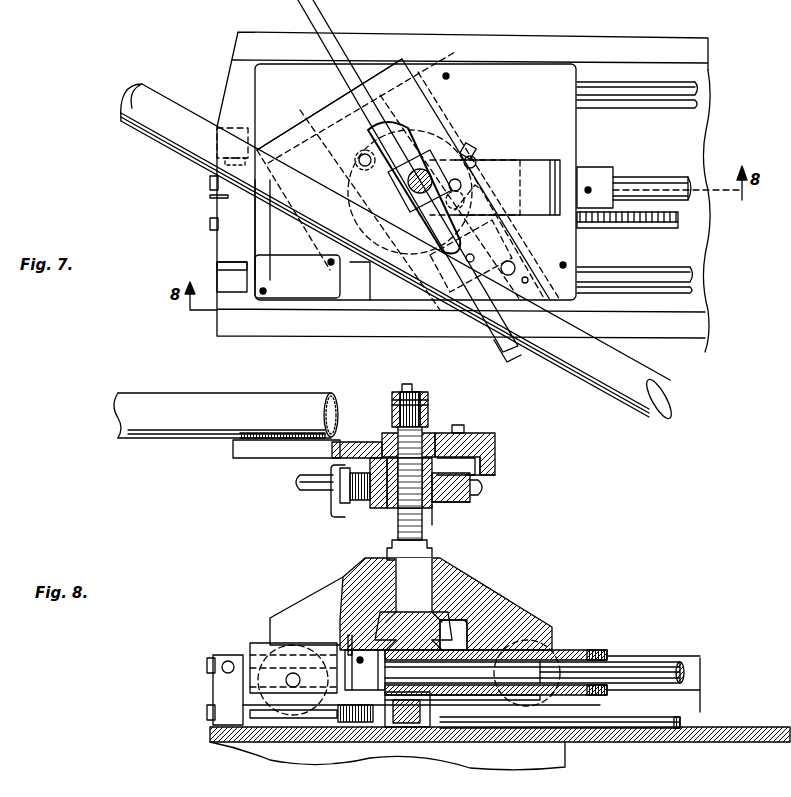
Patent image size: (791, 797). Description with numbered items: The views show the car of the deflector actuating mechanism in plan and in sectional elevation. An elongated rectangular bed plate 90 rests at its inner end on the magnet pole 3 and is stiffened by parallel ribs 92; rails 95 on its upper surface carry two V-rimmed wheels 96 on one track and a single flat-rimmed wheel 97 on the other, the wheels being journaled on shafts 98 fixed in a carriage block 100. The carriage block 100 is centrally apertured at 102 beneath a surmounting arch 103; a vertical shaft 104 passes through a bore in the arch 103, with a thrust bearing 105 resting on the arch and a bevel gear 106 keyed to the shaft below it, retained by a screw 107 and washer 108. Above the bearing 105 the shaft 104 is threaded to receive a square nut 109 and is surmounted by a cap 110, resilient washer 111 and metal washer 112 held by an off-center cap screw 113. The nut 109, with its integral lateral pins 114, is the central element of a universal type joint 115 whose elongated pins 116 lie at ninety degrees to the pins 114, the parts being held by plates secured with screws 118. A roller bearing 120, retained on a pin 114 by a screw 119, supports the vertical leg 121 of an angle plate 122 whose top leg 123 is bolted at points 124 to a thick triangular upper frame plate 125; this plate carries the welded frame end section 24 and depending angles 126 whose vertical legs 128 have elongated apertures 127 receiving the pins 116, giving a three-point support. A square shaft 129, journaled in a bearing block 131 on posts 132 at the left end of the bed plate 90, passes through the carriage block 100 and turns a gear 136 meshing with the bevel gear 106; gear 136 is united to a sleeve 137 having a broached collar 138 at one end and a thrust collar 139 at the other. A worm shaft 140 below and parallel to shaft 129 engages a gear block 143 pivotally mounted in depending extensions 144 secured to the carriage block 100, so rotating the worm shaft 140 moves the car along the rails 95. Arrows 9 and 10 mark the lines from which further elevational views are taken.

In FIG. 8, the magnet pole 3 is at (508, 762).
In FIG. 8, the view arrow 9 is at (580, 540).
In FIG. 8, the view arrow 10 is at (137, 668).
In FIG. 7, the frame end section 24 is at (140, 140).
In FIG. 8, the frame end section 24 is at (130, 445).
In FIG. 7, the bed plate 90 is at (700, 305).
In FIG. 8, the bed plate 90 is at (624, 745).
In FIG. 7, the ribs 92 is at (631, 42).
In FIG. 8, the ribs 92 is at (705, 680).
In FIG. 7, the rails 95 is at (650, 103).
In FIG. 8, the rails 95 is at (630, 720).
In FIG. 8, the V-rimmed wheel 96 is at (560, 702).
In FIG. 8, the flat-rimmed wheel 97 is at (387, 727).
In FIG. 8, the shafts 98 is at (293, 690).
In FIG. 7, the carriage block 100 is at (415, 182).
In FIG. 8, the carriage block 100 is at (520, 598).
In FIG. 7, the aperture 102 is at (452, 125).
In FIG. 8, the aperture 102 is at (348, 634).
In FIG. 7, the central arch 103 is at (532, 158).
In FIG. 8, the central arch 103 is at (296, 605).
In FIG. 7, the shaft 104 is at (408, 230).
In FIG. 8, the shaft 104 is at (398, 442).
In FIG. 8, the thrust bearing 105 is at (432, 554).
In FIG. 8, the bevel gear 106 is at (366, 615).
In FIG. 8, the screw 107 is at (462, 670).
In FIG. 8, the washer 108 is at (425, 622).
In FIG. 7, the square nut 109 is at (428, 165).
In FIG. 8, the square nut 109 is at (392, 500).
In FIG. 8, the cap 110 is at (432, 420).
In FIG. 8, the resilient washer 111 is at (392, 400).
In FIG. 8, the metal washer 112 is at (424, 394).
In FIG. 8, the cap screw 113 is at (400, 388).
In FIG. 7, the pins 114 is at (470, 170).
In FIG. 8, the pins 114 is at (455, 505).
In FIG. 8, the universal type joint 115 is at (445, 515).
In FIG. 7, the pins 116 is at (330, 12).
In FIG. 8, the pins 116 is at (300, 485).
In FIG. 8, the screws 118 is at (358, 515).
In FIG. 7, the screw 119 is at (470, 145).
In FIG. 8, the screw 119 is at (478, 496).
In FIG. 7, the roller bearing 120 is at (477, 162).
In FIG. 8, the roller bearing 120 is at (486, 488).
In FIG. 7, the vertical leg 121 is at (478, 210).
In FIG. 8, the vertical leg 121 is at (497, 474).
In FIG. 7, the angle plate 122 is at (524, 220).
In FIG. 8, the angle plate 122 is at (500, 450).
In FIG. 7, the top leg 123 is at (471, 256).
In FIG. 8, the top leg 123 is at (497, 438).
In FIG. 7, the bolted points 124 is at (520, 278).
In FIG. 8, the bolted points 124 is at (462, 425).
In FIG. 7, the upper frame plate 125 is at (312, 130).
In FIG. 8, the upper frame plate 125 is at (236, 452).
In FIG. 7, the depending angles 126 is at (322, 100).
In FIG. 8, the depending angles 126 is at (325, 470).
In FIG. 8, the apertures 127 is at (348, 520).
In FIG. 8, the legs 128 is at (340, 505).
In FIG. 7, the square shaft 129 is at (640, 178).
In FIG. 8, the square shaft 129 is at (652, 663).
In FIG. 7, the bearing block 131 is at (226, 197).
In FIG. 7, the posts 132 is at (240, 128).
In FIG. 8, the posts 132 is at (212, 687).
In FIG. 8, the gear 136 is at (430, 702).
In FIG. 8, the sleeve 137 is at (553, 648).
In FIG. 7, the collar 138 is at (596, 170).
In FIG. 8, the collar 138 is at (600, 650).
In FIG. 8, the thrust collar 139 is at (346, 655).
In FIG. 7, the worm shaft 140 is at (648, 228).
In FIG. 8, the worm shaft 140 is at (205, 713).
In FIG. 8, the gear block 143 is at (415, 727).
In FIG. 8, the depending extensions 144 is at (442, 740).